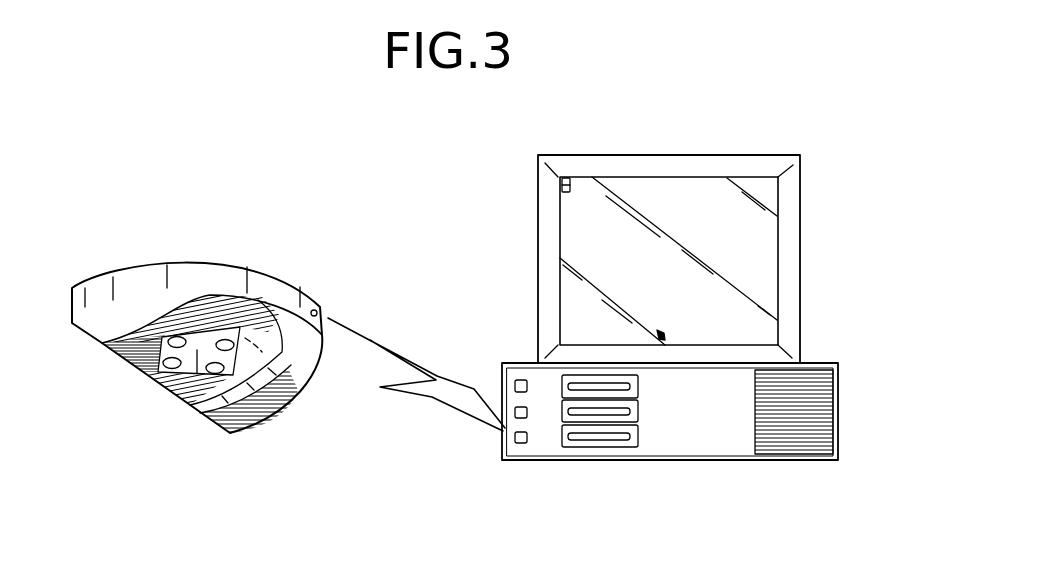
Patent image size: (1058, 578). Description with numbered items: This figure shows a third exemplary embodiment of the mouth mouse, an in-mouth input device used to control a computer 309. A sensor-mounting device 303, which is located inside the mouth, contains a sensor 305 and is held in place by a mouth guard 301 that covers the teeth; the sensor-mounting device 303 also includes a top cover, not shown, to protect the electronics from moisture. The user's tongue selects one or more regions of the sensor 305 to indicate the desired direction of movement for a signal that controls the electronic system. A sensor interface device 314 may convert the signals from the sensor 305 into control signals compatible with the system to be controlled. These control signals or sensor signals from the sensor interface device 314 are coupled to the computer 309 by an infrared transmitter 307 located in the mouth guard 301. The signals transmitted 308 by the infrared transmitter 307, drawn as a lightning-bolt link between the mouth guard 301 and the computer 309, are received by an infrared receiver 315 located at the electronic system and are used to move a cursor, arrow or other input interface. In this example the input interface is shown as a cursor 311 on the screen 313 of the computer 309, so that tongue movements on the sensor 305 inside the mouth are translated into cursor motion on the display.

The mouth guard 301 is at (126, 283).
The sensor-mounting device 303 is at (140, 358).
The sensor 305 is at (197, 378).
The infrared transmitter 307 is at (320, 310).
The signals transmitted 308 is at (403, 393).
The computer 309 is at (673, 287).
The cursor 311 is at (562, 183).
The screen 313 is at (753, 252).
The sensor interface device 314 is at (262, 358).
The infrared receiver 315 is at (528, 438).